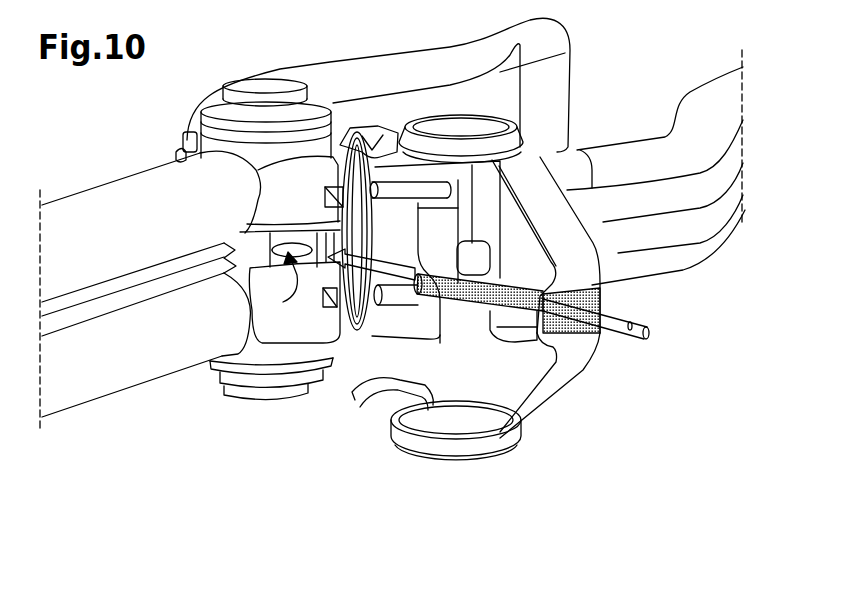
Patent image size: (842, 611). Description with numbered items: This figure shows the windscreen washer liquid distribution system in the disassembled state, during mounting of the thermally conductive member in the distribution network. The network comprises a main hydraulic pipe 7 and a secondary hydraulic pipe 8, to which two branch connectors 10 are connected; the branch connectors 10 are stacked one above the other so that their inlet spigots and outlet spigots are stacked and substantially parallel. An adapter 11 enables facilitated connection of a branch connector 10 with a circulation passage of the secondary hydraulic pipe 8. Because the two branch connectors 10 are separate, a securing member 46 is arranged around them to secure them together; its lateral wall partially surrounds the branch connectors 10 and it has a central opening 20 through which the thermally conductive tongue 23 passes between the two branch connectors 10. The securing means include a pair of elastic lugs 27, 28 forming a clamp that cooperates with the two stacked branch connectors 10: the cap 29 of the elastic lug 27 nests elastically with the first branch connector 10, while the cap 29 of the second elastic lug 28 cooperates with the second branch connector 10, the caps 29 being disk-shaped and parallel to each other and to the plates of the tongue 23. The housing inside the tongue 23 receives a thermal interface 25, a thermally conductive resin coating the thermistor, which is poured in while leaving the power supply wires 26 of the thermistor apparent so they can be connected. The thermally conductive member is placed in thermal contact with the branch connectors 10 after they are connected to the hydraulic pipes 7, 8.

The main hydraulic pipe 7 is at (90, 207).
The secondary hydraulic pipe 8 is at (328, 78).
The branch connector 10 is at (250, 85).
The adapter 11 is at (400, 253).
The central opening 20 is at (258, 300).
The thermally conductive tongue 23 is at (470, 344).
The thermal interface 25 is at (618, 301).
The power supply wires 26 is at (620, 320).
The elastic lug 27 is at (540, 193).
The elastic lug 28 is at (540, 413).
The cap 29 is at (467, 123).
The securing member 46 is at (292, 330).